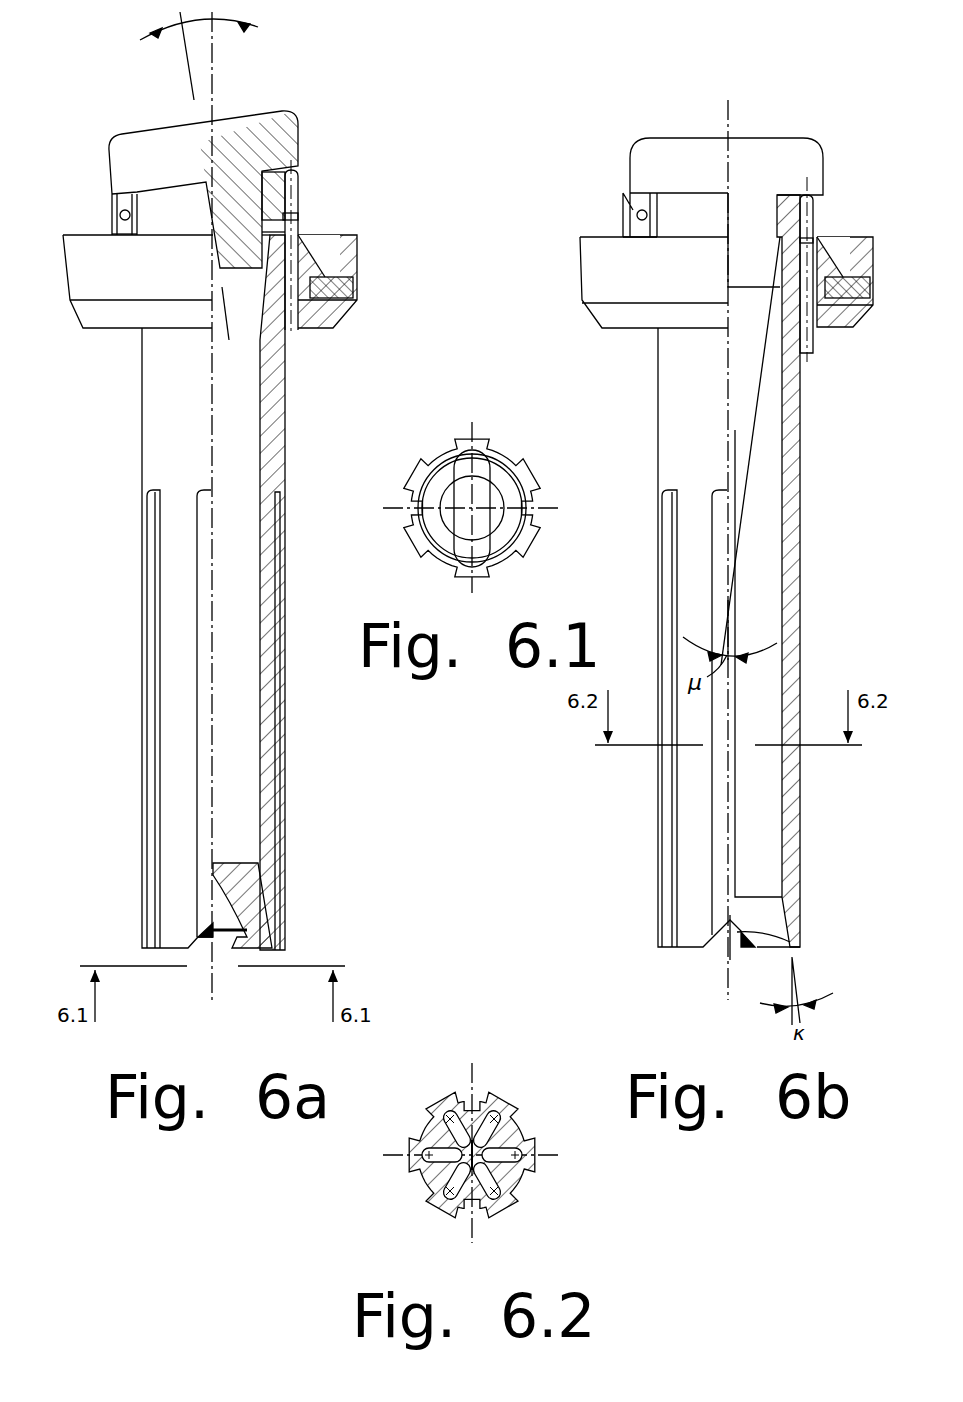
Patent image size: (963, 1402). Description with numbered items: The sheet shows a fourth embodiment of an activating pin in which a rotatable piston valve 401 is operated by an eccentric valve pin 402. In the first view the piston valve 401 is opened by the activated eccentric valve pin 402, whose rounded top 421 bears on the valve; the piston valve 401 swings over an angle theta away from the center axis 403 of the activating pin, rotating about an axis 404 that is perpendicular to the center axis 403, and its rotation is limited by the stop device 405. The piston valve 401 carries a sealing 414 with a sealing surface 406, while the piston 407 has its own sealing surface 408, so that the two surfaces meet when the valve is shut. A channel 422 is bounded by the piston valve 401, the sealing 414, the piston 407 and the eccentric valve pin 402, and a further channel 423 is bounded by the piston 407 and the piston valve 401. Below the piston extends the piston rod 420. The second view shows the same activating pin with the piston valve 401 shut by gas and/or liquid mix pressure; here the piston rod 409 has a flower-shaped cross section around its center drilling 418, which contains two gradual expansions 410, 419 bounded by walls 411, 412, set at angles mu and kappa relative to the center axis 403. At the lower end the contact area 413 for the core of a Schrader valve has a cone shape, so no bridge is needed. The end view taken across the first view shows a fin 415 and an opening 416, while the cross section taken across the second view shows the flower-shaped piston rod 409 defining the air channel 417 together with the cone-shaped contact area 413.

In FIG. 6A, the piston valve 401 is at (277, 132).
In FIG. 6A, the eccentric valve pin 402 is at (292, 333).
In FIG. 6A, the center axis 403 is at (218, 82).
In FIG. 6A, the axis 404 is at (127, 236).
In FIG. 6A, the stop device 405 is at (112, 210).
In FIG. 6A, the sealing surface 406 is at (297, 217).
In FIG. 6A, the piston 407 is at (332, 315).
In FIG. 6A, the sealing surface 408 is at (273, 228).
In FIG. 6B, the piston rod 409 is at (675, 363).
In FIG. 6B, the gradual expansion 410 is at (742, 430).
In FIG. 6B, the wall 411 is at (767, 385).
In FIG. 6B, the wall 412 is at (790, 925).
In FIG. 6B, the contact area 413 is at (753, 932).
In FIG. 6.2, the contact area 413 is at (455, 1163).
In FIG. 6A, the sealing 414 is at (275, 172).
In FIG. 6.1, the fin 415 is at (452, 458).
In FIG. 6.1, the opening 416 is at (510, 495).
In FIG. 6.2, the air channel 417 is at (507, 1135).
In FIG. 6B, the center drilling 418 is at (768, 800).
In FIG. 6B, the gradual expansion 419 is at (763, 907).
In FIG. 6A, the piston rod 420 is at (167, 408).
In FIG. 6A, the rounded top 421 is at (300, 178).
In FIG. 6A, the channel 422 is at (253, 236).
In FIG. 6A, the channel 423 is at (276, 265).